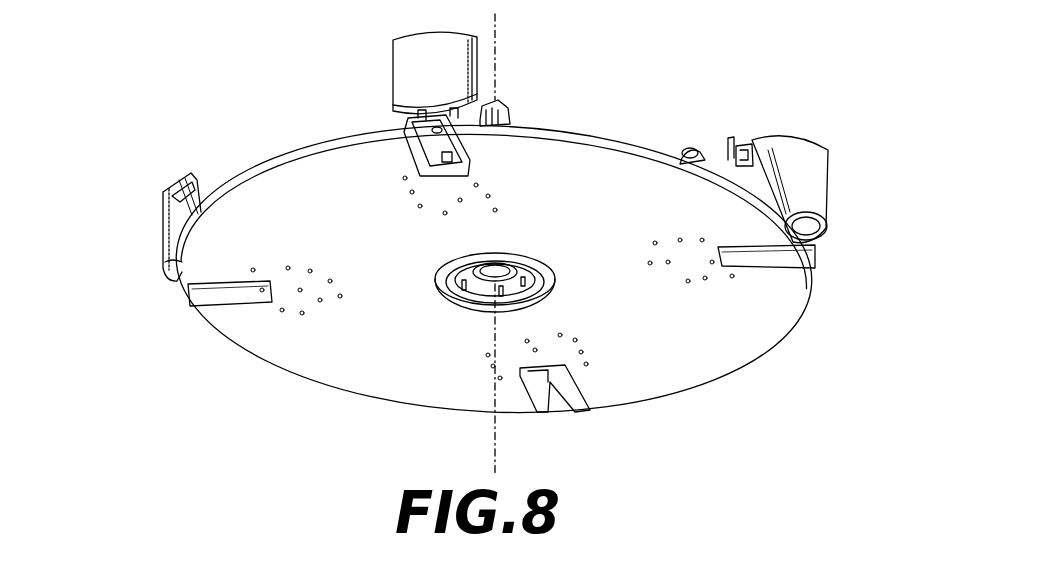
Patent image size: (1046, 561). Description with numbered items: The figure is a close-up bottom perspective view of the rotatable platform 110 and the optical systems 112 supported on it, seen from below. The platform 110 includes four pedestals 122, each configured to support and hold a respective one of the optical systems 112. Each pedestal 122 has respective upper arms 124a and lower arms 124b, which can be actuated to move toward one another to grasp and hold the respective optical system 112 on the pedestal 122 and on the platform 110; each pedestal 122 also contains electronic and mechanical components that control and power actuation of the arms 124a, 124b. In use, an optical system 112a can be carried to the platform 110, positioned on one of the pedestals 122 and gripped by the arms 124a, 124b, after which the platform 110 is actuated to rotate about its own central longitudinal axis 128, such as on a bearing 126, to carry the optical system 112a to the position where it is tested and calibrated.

The rotatable platform 110 is at (680, 348).
The optical systems 112 is at (380, 59).
The optical system 112a is at (836, 182).
The pedestals 122 is at (513, 113).
The upper arms 124a is at (226, 178).
The lower arms 124b is at (424, 152).
The bearing 126 is at (428, 300).
The central longitudinal axis 128 is at (498, 57).